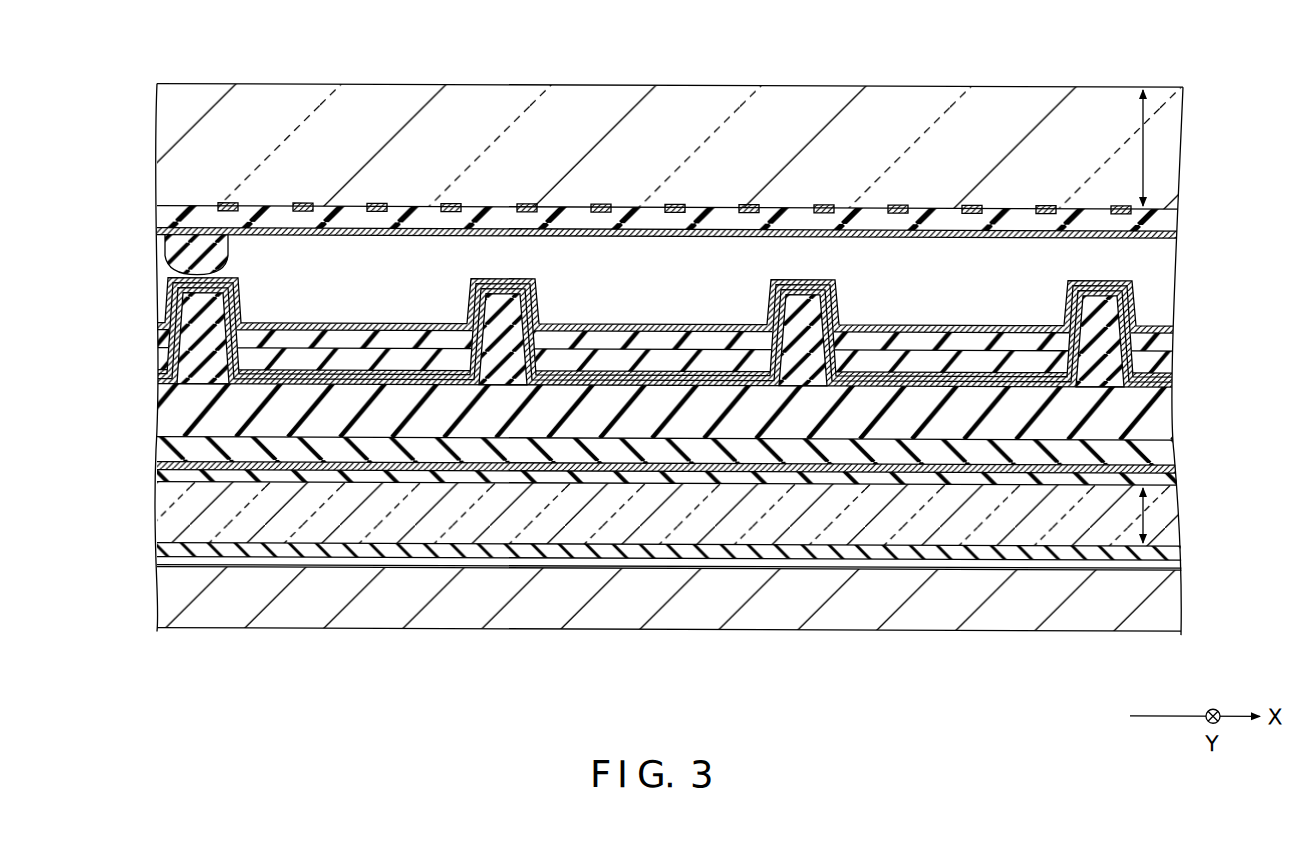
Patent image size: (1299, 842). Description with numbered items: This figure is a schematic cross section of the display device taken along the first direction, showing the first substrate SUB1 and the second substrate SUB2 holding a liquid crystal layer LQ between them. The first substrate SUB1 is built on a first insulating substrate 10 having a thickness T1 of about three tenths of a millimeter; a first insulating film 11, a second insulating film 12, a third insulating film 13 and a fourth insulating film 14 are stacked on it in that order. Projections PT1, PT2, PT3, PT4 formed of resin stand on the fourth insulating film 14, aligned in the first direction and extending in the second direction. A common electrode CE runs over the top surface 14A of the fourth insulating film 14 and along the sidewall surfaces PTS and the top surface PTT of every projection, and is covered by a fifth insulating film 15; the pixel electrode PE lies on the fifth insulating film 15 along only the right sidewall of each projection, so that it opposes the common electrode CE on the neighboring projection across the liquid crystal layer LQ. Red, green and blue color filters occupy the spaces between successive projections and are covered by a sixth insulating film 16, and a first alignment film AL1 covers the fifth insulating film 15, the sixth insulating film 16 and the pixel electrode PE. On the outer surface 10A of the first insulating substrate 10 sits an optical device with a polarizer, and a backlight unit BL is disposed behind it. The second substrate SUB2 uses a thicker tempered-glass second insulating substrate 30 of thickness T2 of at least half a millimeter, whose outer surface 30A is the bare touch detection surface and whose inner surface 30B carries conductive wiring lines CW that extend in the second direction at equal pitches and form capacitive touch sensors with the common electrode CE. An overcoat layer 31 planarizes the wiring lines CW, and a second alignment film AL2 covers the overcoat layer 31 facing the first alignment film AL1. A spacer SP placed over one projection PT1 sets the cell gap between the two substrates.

The second insulating substrate 30 is at (163, 118).
The outer surface 30A is at (1108, 80).
The inner surface 30B is at (1152, 208).
The overcoat layer 31 is at (168, 207).
The second alignment film AL2 is at (168, 231).
The conductive wiring line CW is at (451, 203).
The second substrate SUB2 is at (1186, 104).
The thickness T2 is at (1150, 147).
The liquid crystal layer LQ is at (1163, 255).
The spacer SP is at (225, 262).
The projection PT1 is at (176, 345).
The projection PT2 is at (492, 290).
The projection PT3 is at (786, 305).
The projection PT4 is at (1077, 305).
The top surface PTT is at (195, 282).
The sidewall surface PTS is at (234, 300).
The pixel electrode PE is at (250, 283).
The first alignment film AL1 is at (1173, 322).
The top surface 14A is at (355, 380).
The fourth insulating film 14 is at (160, 405).
The fifth insulating film 15 is at (1176, 357).
The sixth insulating film 16 is at (1035, 335).
The common electrode CE is at (1174, 380).
The third insulating film 13 is at (160, 447).
The second insulating film 12 is at (160, 466).
The first insulating film 11 is at (160, 477).
The first insulating substrate 10 is at (160, 518).
The thickness T1 is at (1148, 512).
The outer surface 10A is at (195, 561).
The first substrate SUB1 is at (1186, 543).
The backlight unit BL is at (1165, 612).